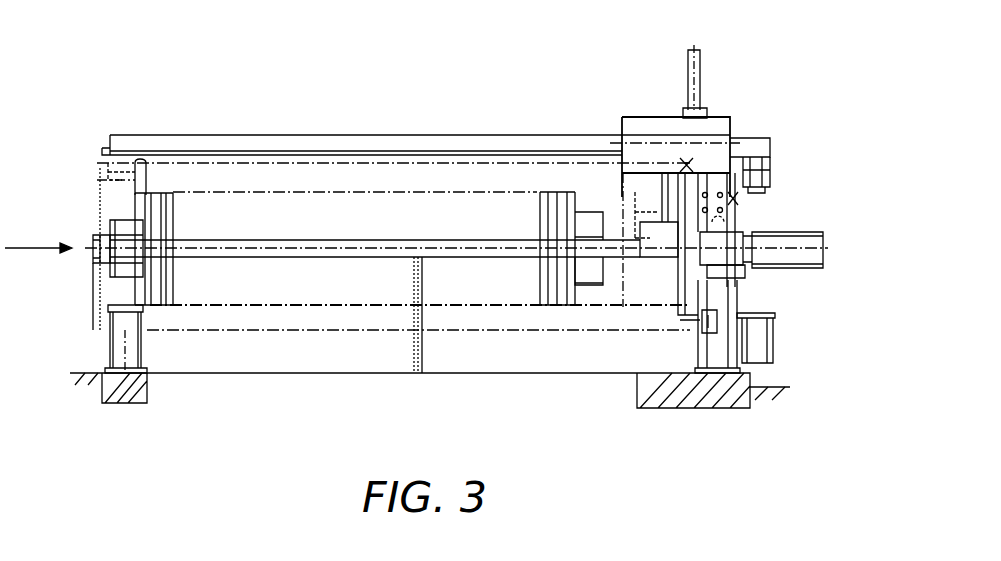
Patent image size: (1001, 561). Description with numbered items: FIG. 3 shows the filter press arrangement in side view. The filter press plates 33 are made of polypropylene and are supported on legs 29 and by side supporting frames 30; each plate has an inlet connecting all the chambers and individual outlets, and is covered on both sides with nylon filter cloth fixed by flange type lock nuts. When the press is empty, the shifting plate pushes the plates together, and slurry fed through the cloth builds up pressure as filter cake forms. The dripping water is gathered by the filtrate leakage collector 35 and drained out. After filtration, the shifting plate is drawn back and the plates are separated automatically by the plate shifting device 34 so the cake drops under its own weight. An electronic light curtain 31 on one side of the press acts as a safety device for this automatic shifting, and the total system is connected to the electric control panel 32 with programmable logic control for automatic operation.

The legs 29 is at (143, 372).
The side supporting frames 30 is at (413, 247).
The electronic light curtain 31 is at (688, 268).
The electric control panel 32 is at (767, 178).
The filter press plates made of polypropylene 33 is at (558, 300).
The plate shifting device 34 is at (573, 237).
The filtrate leakage collector 35 is at (313, 322).